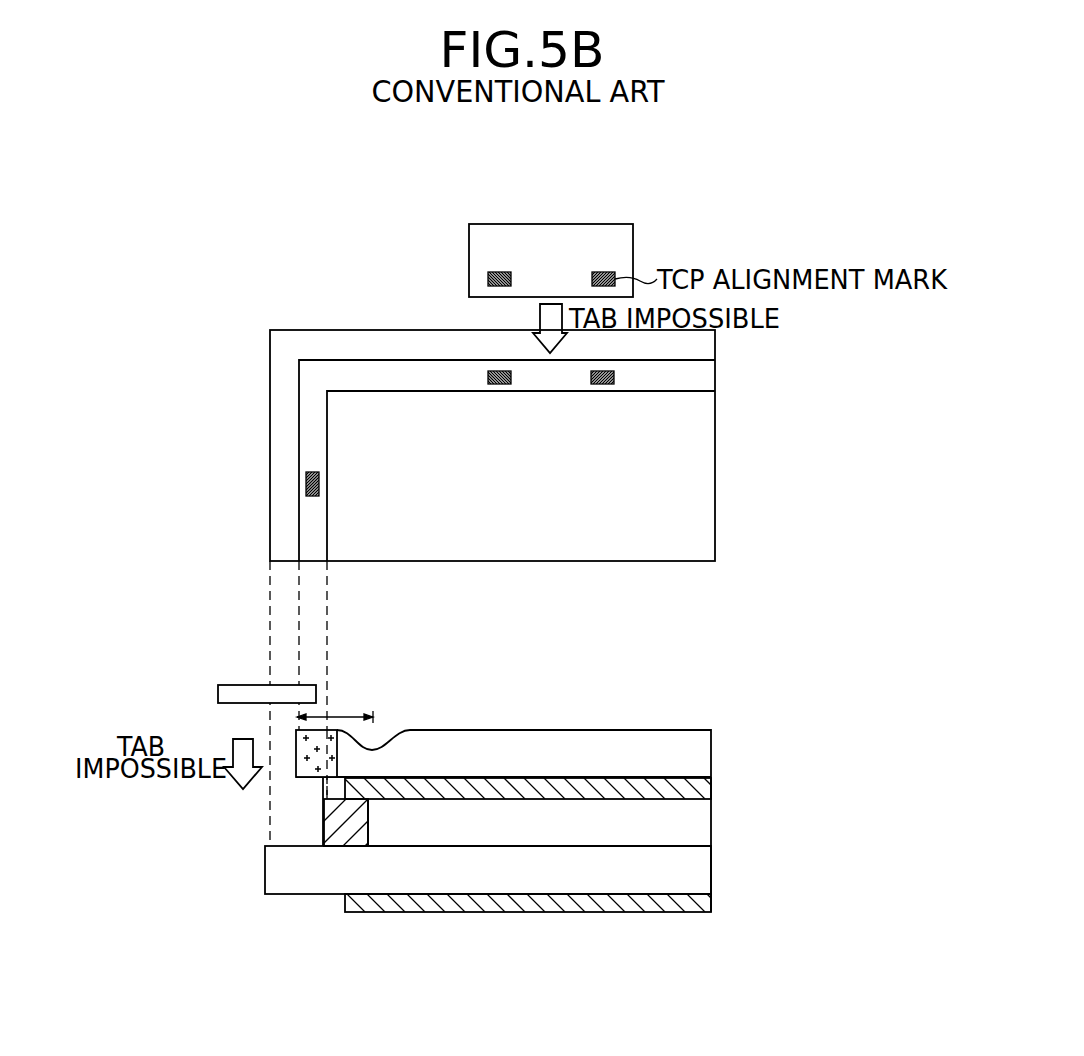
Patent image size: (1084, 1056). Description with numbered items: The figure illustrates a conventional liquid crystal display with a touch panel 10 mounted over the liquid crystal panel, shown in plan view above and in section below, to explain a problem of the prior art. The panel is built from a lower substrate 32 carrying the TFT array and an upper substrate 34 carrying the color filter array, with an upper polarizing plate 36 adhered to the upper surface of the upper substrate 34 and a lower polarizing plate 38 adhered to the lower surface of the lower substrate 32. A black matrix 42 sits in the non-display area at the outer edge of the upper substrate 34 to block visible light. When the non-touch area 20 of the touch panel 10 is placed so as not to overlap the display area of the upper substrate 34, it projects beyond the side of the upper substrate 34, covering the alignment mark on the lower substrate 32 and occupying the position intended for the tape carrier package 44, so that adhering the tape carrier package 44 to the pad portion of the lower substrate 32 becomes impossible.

The touch panel 10 is at (300, 446).
The non-touch area 20 is at (335, 706).
The lower substrate 32 is at (300, 330).
The upper substrate 34 is at (385, 391).
The upper polarizing plate 36 is at (705, 796).
The lower polarizing plate 38 is at (457, 898).
The black matrix 42 is at (325, 833).
The tape carrier package 44 is at (625, 249).